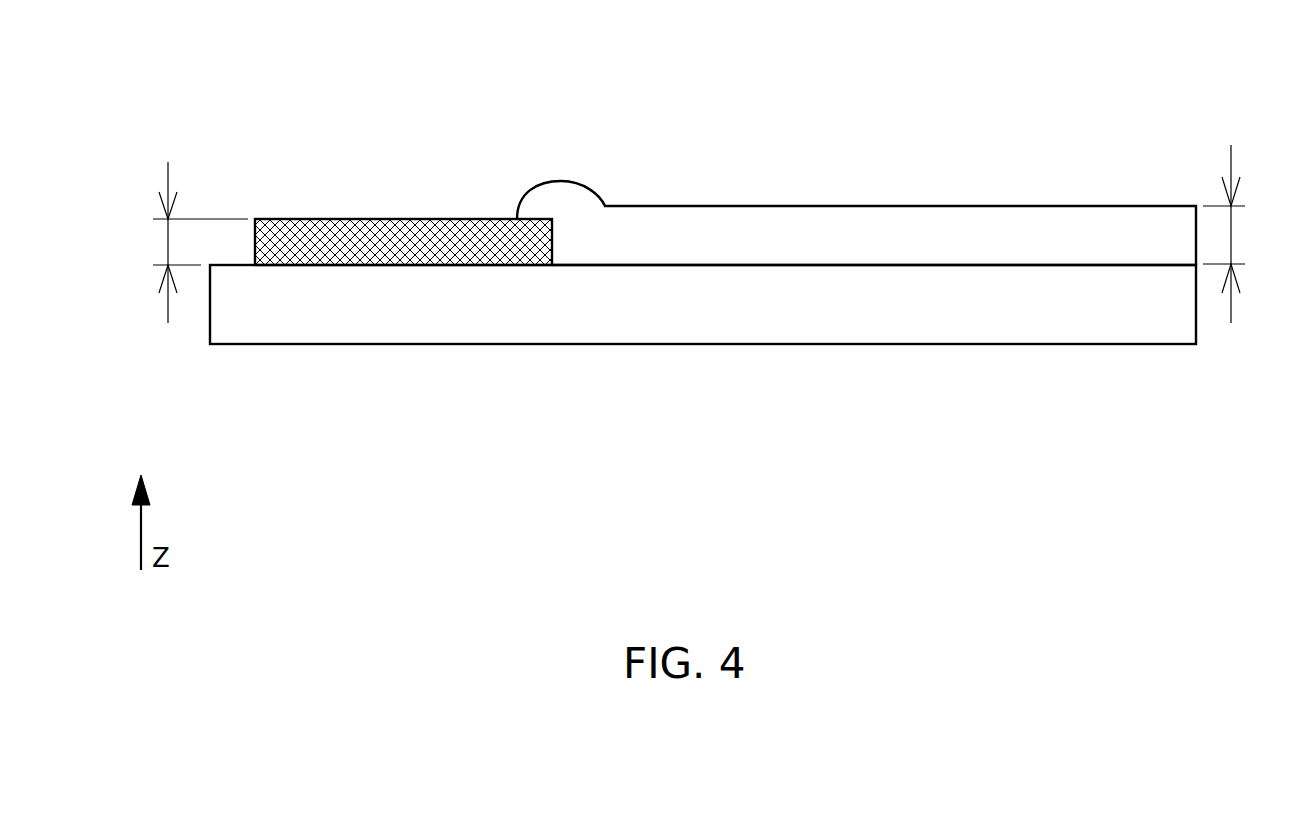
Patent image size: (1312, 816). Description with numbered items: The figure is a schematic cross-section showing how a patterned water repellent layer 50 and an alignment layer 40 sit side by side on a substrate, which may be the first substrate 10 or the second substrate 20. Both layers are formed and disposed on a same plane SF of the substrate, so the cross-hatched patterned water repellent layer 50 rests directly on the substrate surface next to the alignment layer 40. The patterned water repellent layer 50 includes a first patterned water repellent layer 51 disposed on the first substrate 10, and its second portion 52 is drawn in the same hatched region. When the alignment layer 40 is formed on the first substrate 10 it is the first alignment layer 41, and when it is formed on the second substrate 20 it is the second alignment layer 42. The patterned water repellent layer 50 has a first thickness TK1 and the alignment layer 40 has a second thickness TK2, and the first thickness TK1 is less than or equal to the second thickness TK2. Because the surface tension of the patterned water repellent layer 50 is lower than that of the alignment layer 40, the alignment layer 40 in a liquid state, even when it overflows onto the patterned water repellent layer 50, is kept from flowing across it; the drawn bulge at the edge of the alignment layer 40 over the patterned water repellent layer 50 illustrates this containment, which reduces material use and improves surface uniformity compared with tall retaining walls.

The first substrate 10 is at (702, 373).
The second substrate 20 is at (244, 313).
The alignment layer 40 is at (856, 163).
The first alignment layer 41 is at (856, 223).
The second alignment layer 42 is at (741, 250).
The patterned water repellent layer 50 is at (403, 159).
The first patterned water repellent layer 51 is at (403, 242).
The second patterned portion 52 is at (386, 237).
The plane SF is at (994, 263).
The first thickness TK1 is at (178, 242).
The second thickness TK2 is at (1244, 234).